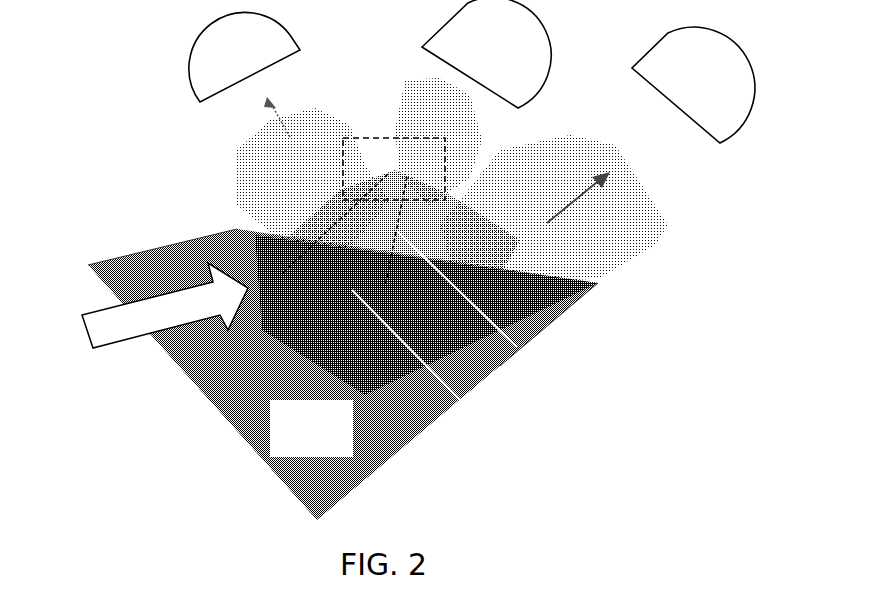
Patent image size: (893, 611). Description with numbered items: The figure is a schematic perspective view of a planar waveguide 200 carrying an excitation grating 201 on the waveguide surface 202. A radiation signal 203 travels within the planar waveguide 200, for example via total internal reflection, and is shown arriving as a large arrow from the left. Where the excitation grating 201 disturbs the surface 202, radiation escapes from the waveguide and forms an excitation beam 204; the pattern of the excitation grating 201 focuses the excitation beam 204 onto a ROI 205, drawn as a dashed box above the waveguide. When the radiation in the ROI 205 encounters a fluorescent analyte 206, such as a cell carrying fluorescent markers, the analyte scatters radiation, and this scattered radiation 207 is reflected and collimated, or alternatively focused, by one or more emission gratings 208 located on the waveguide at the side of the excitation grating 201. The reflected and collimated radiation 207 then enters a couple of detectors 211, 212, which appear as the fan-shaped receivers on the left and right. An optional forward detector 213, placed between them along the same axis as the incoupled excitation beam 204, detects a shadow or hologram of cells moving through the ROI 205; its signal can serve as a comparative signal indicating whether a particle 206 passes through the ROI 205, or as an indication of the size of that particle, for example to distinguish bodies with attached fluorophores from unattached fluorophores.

The planar waveguide 200 is at (335, 446).
The excitation grating 201 is at (460, 398).
The waveguide surface 202 is at (118, 265).
The radiation signal 203 is at (122, 340).
The excitation beam 204 is at (520, 353).
The ROI 205 is at (448, 166).
The fluorescent analyte 206 is at (382, 150).
The radiation 207 is at (505, 238).
The emission grating 208 is at (568, 312).
The detector 211 is at (259, 61).
The detector 212 is at (728, 86).
The forward detector 213 is at (517, 61).